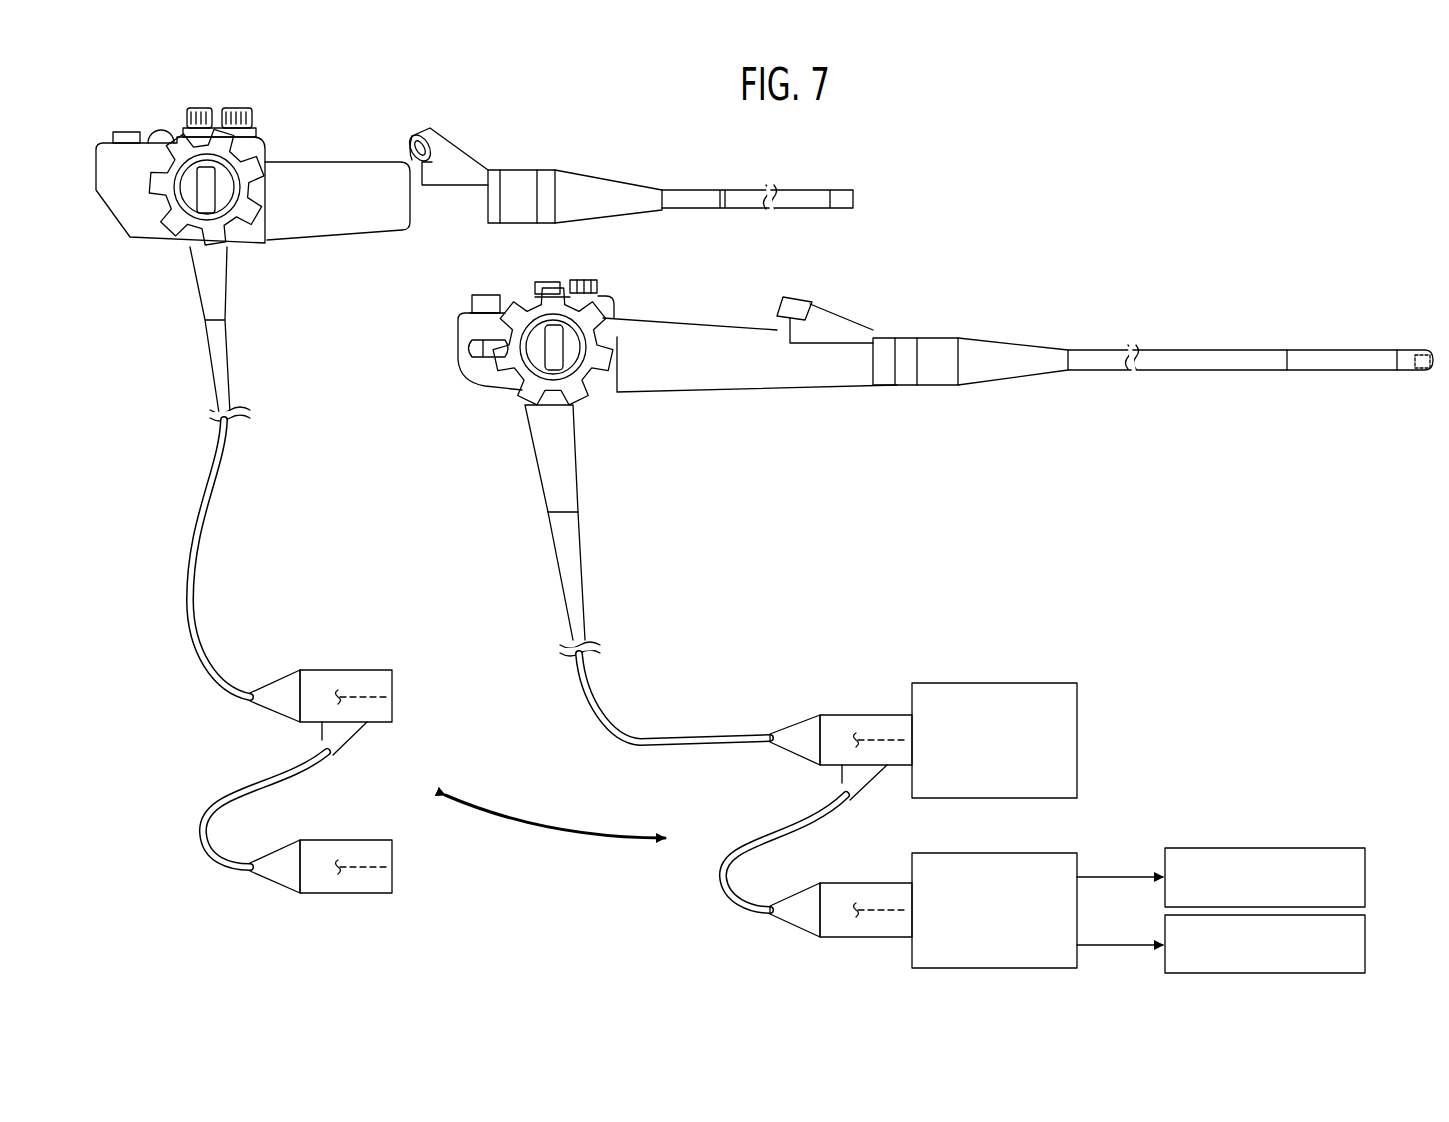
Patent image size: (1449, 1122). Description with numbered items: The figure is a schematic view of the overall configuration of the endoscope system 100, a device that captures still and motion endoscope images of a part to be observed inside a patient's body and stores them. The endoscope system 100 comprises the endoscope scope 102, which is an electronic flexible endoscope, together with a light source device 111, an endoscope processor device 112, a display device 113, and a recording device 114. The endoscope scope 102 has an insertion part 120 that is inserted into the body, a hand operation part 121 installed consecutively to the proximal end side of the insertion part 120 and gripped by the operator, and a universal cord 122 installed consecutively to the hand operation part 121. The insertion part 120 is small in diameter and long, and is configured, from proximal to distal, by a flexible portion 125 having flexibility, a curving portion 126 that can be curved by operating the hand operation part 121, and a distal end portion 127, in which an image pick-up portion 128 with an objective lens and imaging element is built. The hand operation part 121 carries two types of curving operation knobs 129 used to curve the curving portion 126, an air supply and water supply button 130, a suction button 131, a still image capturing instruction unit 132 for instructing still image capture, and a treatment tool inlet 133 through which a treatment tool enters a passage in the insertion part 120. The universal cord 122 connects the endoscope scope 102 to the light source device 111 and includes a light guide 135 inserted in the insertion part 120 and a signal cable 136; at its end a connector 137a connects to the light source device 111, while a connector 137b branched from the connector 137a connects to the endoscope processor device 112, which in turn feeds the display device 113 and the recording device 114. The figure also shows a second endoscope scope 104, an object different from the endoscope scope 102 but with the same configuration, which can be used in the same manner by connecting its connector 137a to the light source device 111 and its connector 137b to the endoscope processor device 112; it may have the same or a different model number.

The endoscope system 100 is at (1186, 185).
The endoscope scope 102 is at (1012, 333).
The endoscope scope 104 is at (613, 170).
The light source device 111 is at (993, 683).
The endoscope processor device 112 is at (993, 853).
The display device 113 is at (1366, 877).
The recording device 114 is at (1366, 945).
The insertion part 120 is at (1423, 420).
The hand operation part 121 is at (697, 328).
The universal cord 122 is at (582, 583).
The flexible portion 125 is at (1240, 370).
The curving portion 126 is at (1340, 370).
The distal end portion 127 is at (1410, 372).
The image pick-up portion 128 is at (1418, 350).
The curving operation knobs 129 is at (500, 345).
The air supply and water supply button 130 is at (583, 280).
The suction button 131 is at (542, 282).
The still image capturing instruction unit 132 is at (485, 295).
The treatment tool inlet 133 is at (790, 297).
The light guide 135 is at (882, 740).
The signal cable 136 is at (882, 910).
The connector 137a is at (833, 717).
The connector 137b is at (833, 937).